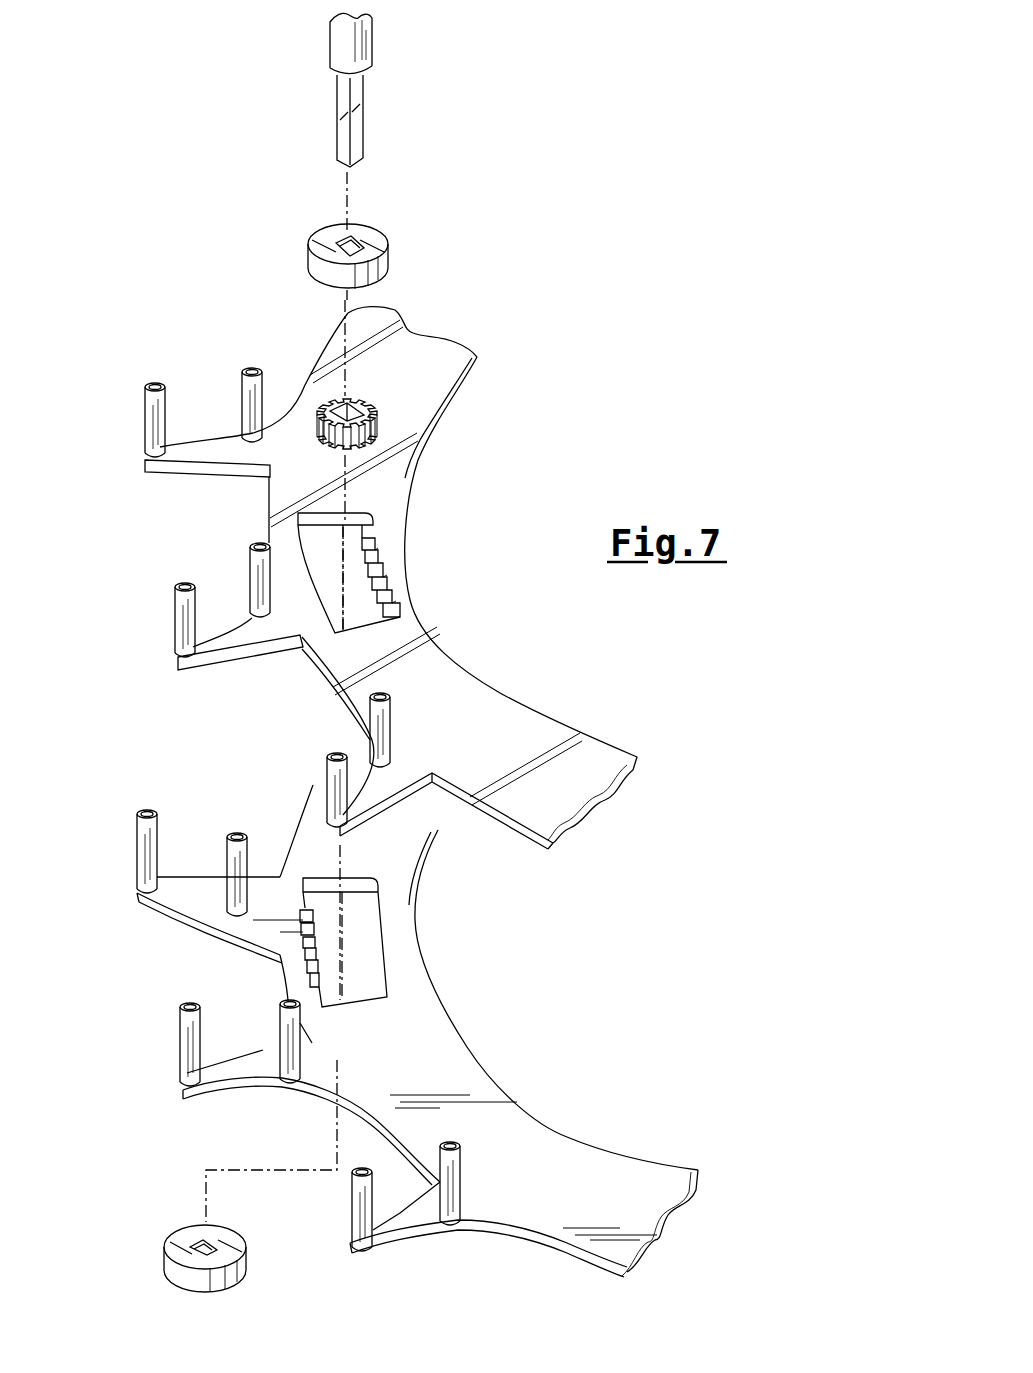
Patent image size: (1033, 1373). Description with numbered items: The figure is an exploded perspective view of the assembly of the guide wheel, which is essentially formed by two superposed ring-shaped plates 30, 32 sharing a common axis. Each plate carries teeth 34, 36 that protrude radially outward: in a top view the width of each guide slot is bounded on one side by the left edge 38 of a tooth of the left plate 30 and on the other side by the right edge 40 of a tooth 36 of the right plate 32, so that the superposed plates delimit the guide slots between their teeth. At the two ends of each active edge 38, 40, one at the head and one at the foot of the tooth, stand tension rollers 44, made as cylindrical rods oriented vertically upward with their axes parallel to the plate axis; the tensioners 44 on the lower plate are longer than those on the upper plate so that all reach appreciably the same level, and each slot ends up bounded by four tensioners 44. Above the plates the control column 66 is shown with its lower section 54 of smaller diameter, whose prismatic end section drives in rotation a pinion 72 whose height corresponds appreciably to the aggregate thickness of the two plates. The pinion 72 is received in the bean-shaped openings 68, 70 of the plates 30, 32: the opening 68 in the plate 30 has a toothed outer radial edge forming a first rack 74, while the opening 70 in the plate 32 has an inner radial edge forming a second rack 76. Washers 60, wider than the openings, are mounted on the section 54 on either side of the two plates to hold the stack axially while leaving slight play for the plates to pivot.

The left plate 30 is at (572, 1100).
The right plate 32 is at (540, 687).
The teeth 34 is at (242, 1068).
The teeth 36 is at (215, 454).
The left edge 38 is at (227, 1097).
The right edge 40 is at (220, 441).
The tension rollers 44 is at (150, 404).
The section of smaller diameter 54 is at (340, 110).
The washers 60 is at (370, 247).
The control column 66 is at (337, 42).
The opening 68 is at (353, 980).
The opening 70 is at (325, 557).
The pinion 72 is at (370, 407).
The first rack 74 is at (322, 938).
The second rack 76 is at (358, 572).